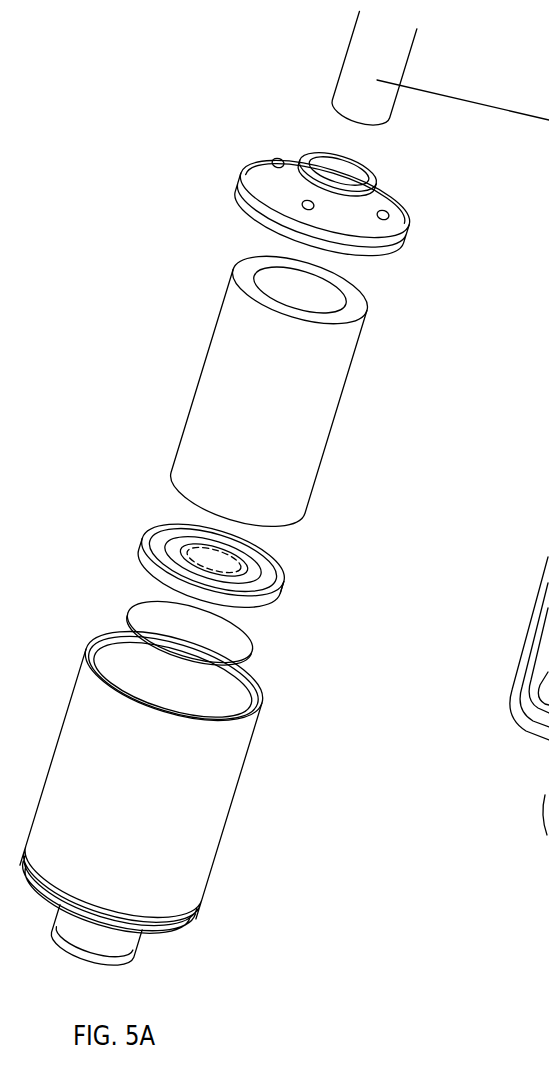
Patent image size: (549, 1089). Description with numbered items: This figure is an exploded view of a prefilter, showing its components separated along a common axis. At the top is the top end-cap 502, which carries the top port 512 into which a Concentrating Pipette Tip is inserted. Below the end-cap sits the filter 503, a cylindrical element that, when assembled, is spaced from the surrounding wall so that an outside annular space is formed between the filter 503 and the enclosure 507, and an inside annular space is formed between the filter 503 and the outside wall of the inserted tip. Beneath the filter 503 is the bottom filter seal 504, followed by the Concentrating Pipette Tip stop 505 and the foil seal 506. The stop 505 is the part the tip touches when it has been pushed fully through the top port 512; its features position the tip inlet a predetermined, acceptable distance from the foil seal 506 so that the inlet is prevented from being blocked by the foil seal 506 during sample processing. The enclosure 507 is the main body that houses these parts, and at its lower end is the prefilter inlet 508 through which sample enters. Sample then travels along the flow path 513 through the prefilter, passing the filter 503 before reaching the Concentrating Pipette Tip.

The top end-cap 502 is at (383, 228).
The filter 503 is at (548, 455).
The bottom filter seal 504 is at (548, 651).
The Concentrating Pipette Tip stop 505 is at (543, 685).
The foil seal 506 is at (205, 633).
The enclosure 507 is at (152, 773).
The prefilter inlet 508 is at (548, 868).
The top port 512 is at (337, 170).
The flow path 513 is at (533, 701).